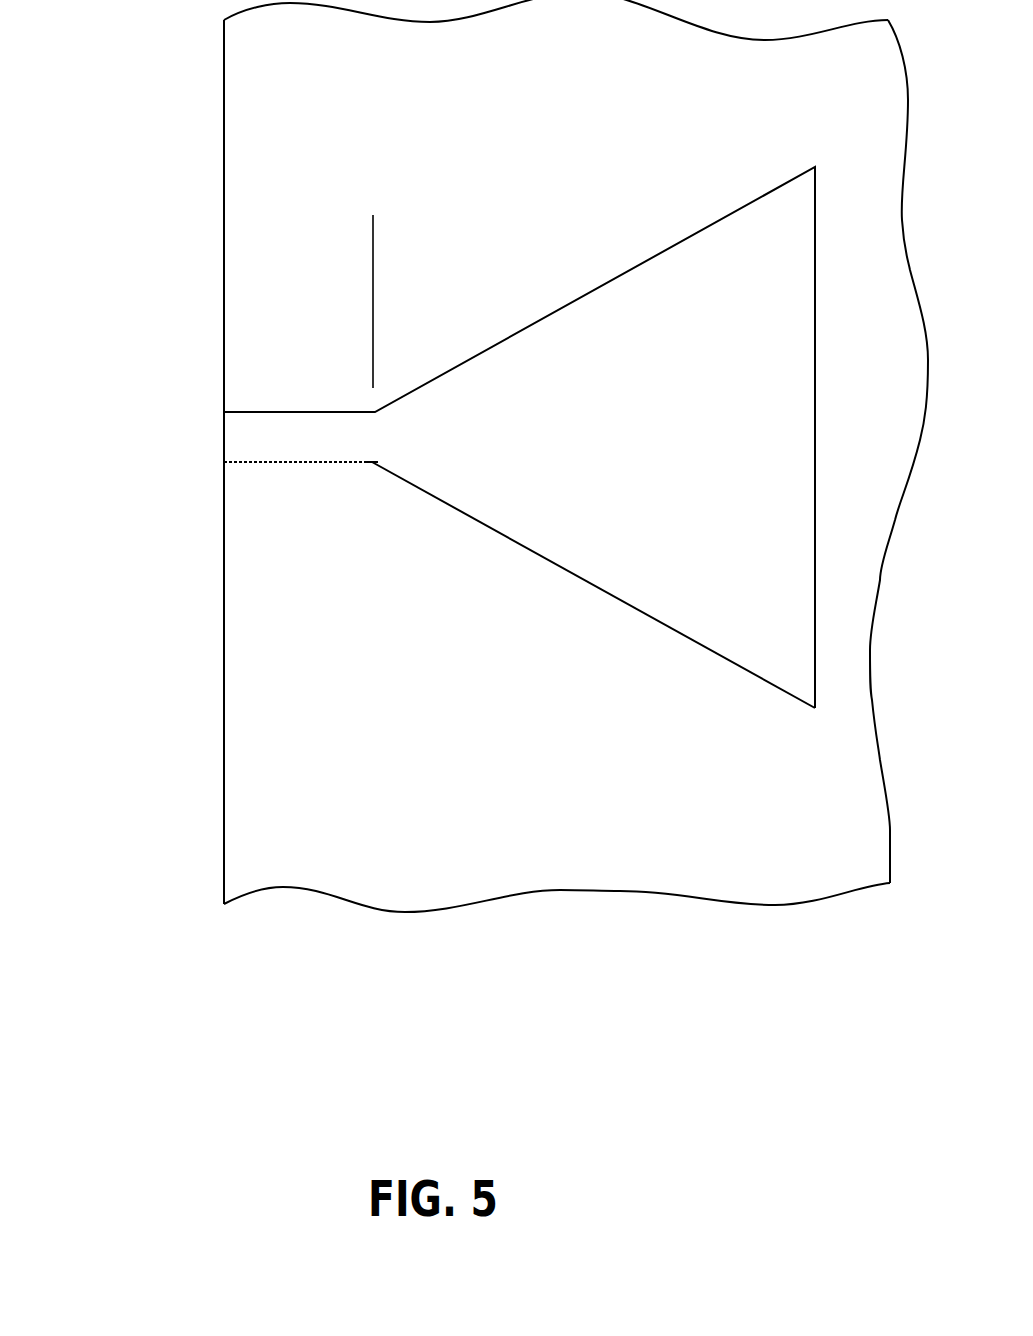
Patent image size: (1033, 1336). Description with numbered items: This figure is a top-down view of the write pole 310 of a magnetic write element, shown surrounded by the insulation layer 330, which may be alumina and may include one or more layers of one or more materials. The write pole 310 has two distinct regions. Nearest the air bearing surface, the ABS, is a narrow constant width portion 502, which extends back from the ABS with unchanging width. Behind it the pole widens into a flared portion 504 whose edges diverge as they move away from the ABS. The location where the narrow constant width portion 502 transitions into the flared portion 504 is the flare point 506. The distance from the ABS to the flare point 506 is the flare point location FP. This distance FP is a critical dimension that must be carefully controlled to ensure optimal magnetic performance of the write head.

The insulation layer 330 is at (596, 118).
The write pole 310 is at (716, 413).
The narrow constant width portion 502 is at (273, 462).
The flared portion 504 is at (640, 613).
The flare point 506 is at (372, 462).
The air bearing surface ABS is at (224, 264).
The flare point location FP is at (372, 290).